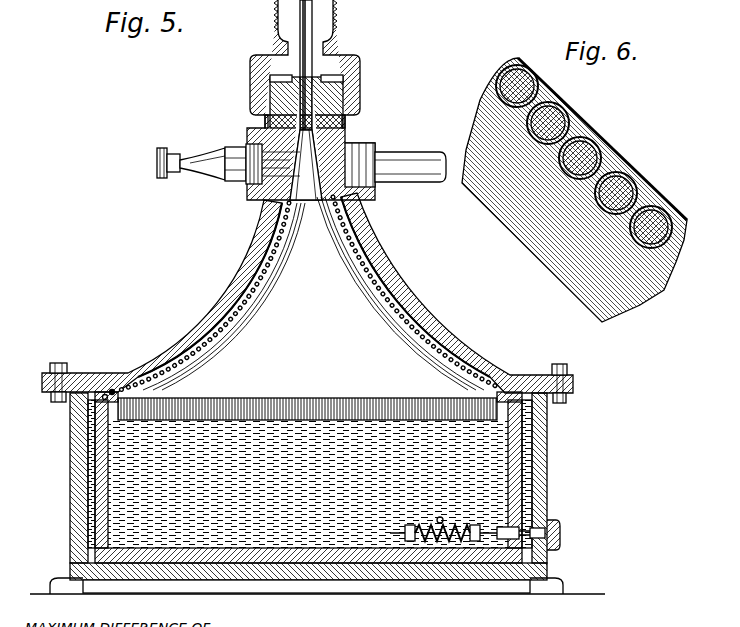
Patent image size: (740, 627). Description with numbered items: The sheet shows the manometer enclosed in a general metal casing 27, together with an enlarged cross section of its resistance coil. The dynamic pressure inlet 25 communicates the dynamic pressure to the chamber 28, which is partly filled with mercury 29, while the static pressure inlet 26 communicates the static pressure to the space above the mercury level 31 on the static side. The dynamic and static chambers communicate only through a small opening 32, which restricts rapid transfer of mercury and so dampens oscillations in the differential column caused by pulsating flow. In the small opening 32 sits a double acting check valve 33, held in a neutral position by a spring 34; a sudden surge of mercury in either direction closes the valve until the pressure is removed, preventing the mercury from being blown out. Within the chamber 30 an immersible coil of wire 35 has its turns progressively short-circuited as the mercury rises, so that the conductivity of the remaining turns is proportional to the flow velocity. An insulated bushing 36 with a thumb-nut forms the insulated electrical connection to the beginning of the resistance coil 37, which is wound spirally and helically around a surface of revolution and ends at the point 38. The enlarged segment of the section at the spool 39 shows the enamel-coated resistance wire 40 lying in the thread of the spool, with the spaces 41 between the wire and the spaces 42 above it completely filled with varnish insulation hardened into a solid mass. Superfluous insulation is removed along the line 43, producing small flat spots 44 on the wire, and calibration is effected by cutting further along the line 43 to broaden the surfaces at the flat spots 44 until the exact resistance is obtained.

In FIG. 5, the dynamic pressure inlet 25 is at (318, 52).
In FIG. 5, the static pressure inlet 26 is at (405, 160).
In FIG. 5, the metal casing 27 is at (410, 321).
In FIG. 5, the chamber 28 is at (305, 335).
In FIG. 5, the mercury 29 is at (308, 484).
In FIG. 5, the chamber 30 is at (372, 284).
In FIG. 5, the mercury level 31 is at (548, 424).
In FIG. 5, the small opening 32 is at (546, 523).
In FIG. 5, the double acting check valve 33 is at (560, 537).
In FIG. 5, the spring 34 is at (458, 541).
In FIG. 5, the immersible coil of wire 35 is at (136, 378).
In FIG. 5, the insulated bushing 36 is at (160, 168).
In FIG. 5, the beginning of resistance coil 37 is at (343, 136).
In FIG. 5, the end of resistance coil 38 is at (518, 392).
In FIG. 5, the spool 39 is at (392, 350).
In FIG. 6, the resistance wire 40 is at (520, 60).
In FIG. 6, the spaces between wire 41 is at (652, 196).
In FIG. 6, the spaces above wire 42 is at (634, 178).
In FIG. 6, the cutting line 43 is at (575, 136).
In FIG. 6, the flat spots 44 is at (540, 78).